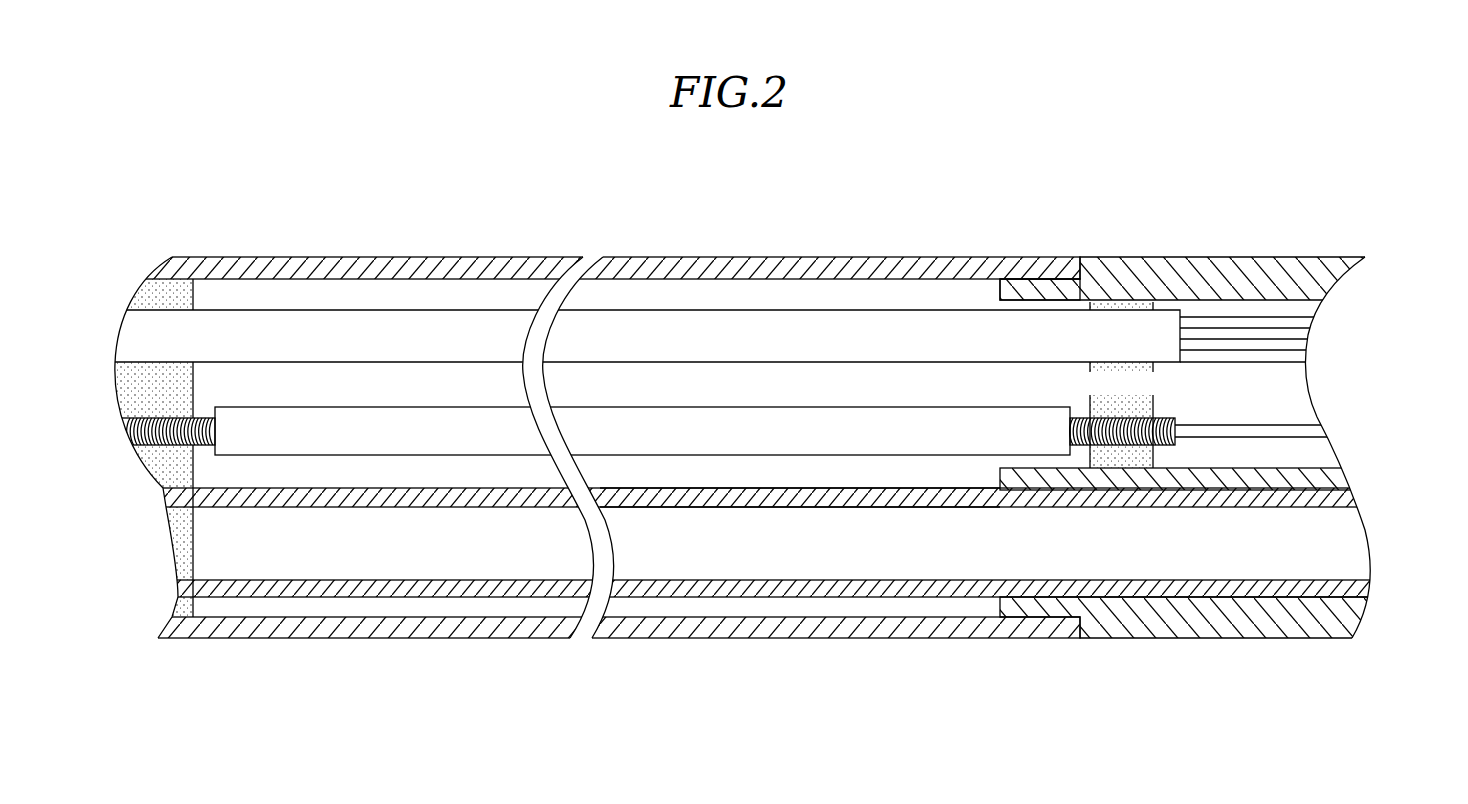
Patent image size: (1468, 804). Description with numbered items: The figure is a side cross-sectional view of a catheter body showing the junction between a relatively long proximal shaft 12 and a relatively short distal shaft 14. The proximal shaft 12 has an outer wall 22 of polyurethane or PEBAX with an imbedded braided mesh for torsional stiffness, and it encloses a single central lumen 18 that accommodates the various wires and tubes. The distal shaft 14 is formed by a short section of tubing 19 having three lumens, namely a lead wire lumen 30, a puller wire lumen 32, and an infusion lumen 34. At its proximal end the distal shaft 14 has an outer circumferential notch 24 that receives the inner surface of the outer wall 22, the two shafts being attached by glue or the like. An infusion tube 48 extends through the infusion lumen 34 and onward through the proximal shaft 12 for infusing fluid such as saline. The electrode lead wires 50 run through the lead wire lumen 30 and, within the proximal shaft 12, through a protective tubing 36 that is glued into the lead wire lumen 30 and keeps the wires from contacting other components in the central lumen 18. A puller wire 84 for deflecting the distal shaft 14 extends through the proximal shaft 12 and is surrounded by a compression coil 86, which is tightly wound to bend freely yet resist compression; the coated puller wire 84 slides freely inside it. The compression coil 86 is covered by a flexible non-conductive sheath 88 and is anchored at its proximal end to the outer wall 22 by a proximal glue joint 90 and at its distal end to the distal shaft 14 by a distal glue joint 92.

The proximal shaft 12 is at (648, 650).
The distal shaft 14 is at (1198, 682).
The central lumen 18 is at (902, 468).
The tubing 19 is at (1225, 268).
The outer wall 22 is at (800, 267).
The outer circumferential notch 24 is at (1077, 278).
The lead wire lumen 30 is at (1293, 307).
The puller wire lumen 32 is at (1293, 453).
The infusion lumen 34 is at (1368, 598).
The protective tubing 36 is at (685, 335).
The infusion tube 48 is at (1352, 500).
The electrode lead wires 50 is at (1273, 325).
The puller wire 84 is at (1293, 430).
The compression coil 86 is at (150, 447).
The non-conductive sheath 88 is at (792, 435).
The proximal glue joint 90 is at (195, 602).
The distal glue joint 92 is at (1127, 455).